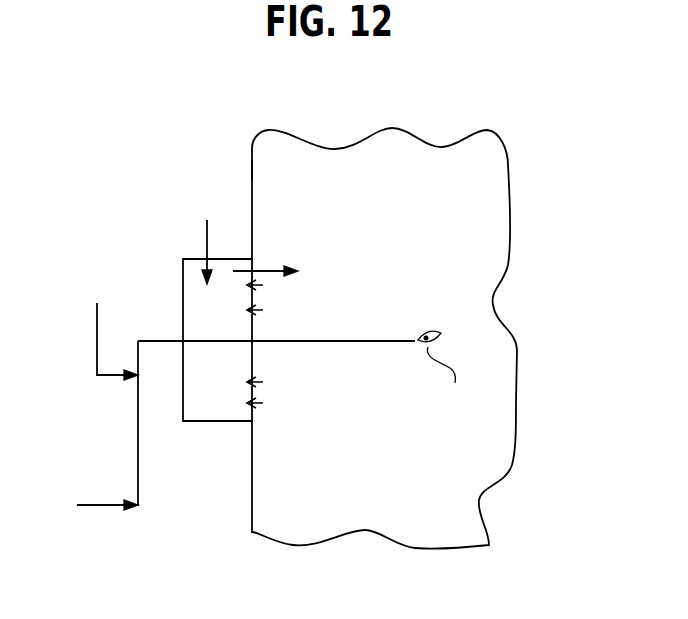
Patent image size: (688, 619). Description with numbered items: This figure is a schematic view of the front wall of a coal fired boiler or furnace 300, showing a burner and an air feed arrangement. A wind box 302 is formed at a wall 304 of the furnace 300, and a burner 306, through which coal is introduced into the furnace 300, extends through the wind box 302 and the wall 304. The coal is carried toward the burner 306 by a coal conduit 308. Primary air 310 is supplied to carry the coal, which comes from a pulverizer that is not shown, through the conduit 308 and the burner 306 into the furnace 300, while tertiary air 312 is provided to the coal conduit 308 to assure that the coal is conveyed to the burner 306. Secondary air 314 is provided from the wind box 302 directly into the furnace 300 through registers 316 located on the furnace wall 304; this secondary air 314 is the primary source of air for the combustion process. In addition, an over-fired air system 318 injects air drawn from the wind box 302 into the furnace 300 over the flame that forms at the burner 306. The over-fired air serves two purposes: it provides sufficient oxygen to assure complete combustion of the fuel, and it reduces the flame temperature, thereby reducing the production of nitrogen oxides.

The coal fired boiler or furnace 300 is at (487, 224).
The wind box 302 is at (183, 302).
The wall 304 is at (252, 168).
The burner 306 is at (374, 341).
The coal conduit 308 is at (139, 472).
The primary air 310 is at (80, 506).
The tertiary air 312 is at (97, 362).
The secondary air 314 is at (207, 243).
The registers 316 is at (256, 291).
The over-fired air system 318 is at (270, 269).